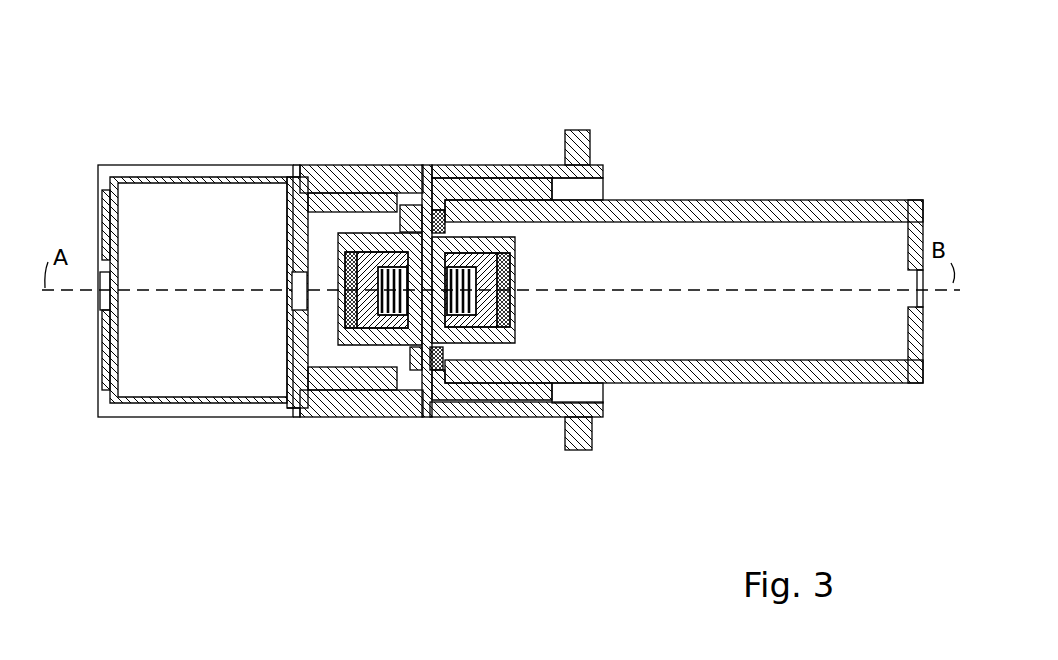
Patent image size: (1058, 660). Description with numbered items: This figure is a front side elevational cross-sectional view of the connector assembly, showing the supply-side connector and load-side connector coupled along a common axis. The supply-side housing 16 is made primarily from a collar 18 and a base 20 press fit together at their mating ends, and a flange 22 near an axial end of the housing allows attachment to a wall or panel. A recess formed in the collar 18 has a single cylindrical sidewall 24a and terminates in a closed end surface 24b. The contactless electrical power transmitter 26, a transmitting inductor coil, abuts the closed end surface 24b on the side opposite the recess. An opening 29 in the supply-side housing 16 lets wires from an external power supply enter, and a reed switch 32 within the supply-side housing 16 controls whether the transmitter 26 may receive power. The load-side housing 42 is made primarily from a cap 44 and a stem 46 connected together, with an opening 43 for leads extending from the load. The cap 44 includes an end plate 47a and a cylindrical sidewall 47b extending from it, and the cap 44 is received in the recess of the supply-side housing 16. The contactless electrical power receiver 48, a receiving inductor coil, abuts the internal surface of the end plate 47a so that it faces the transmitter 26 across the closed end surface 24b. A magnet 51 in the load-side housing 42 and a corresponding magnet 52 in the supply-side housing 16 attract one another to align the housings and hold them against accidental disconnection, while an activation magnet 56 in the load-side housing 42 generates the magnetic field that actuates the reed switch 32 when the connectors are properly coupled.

The supply-side housing 16 is at (360, 107).
The collar 18 is at (315, 163).
The base 20 is at (282, 167).
The flange 22 is at (587, 443).
The sidewall 24a is at (590, 393).
The closed end surface 24b is at (418, 400).
The contactless electrical power transmitter 26 is at (379, 330).
The opening 29 is at (288, 292).
The reed switch 32 is at (405, 205).
The load-side housing 42 is at (672, 85).
The opening 43 is at (915, 300).
The cap 44 is at (570, 180).
The stem 46 is at (655, 200).
The end plate 47a is at (445, 352).
The cylindrical sidewall 47b is at (508, 400).
The contactless electrical power receiver 48 is at (513, 263).
The magnet 51 is at (433, 335).
The magnet 52 is at (412, 355).
The activation magnet 56 is at (438, 210).